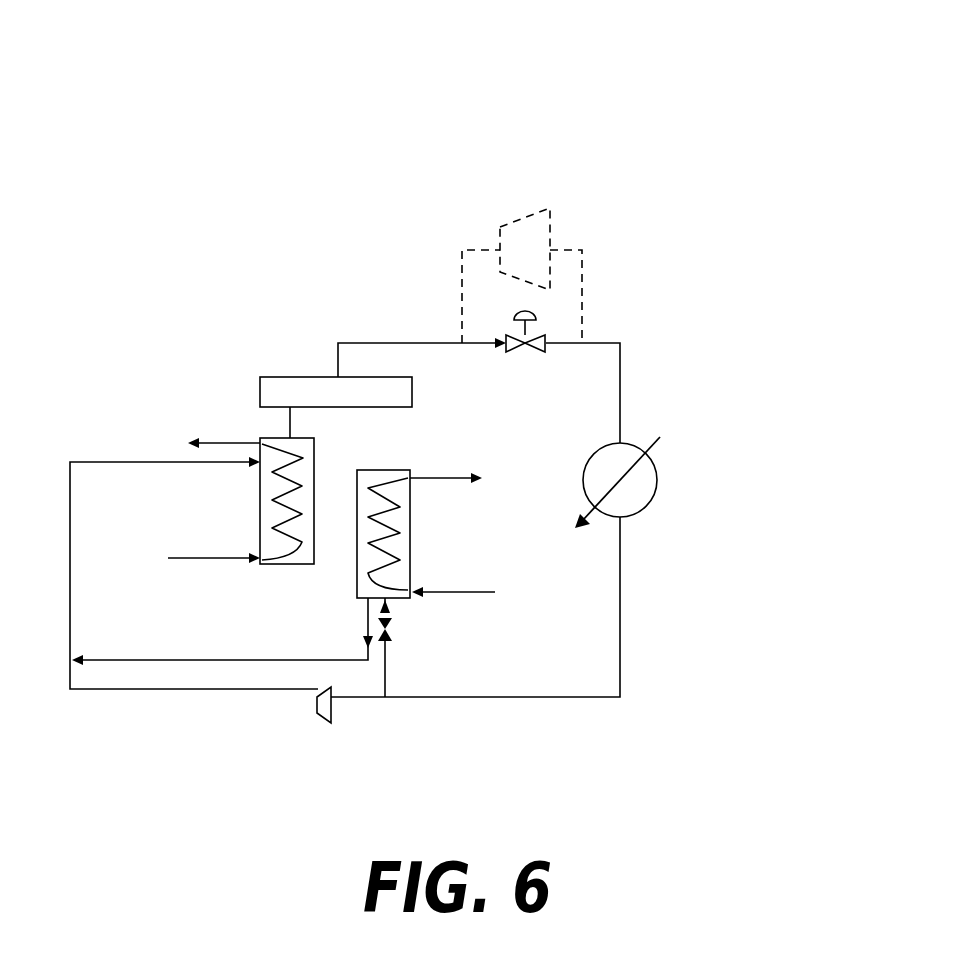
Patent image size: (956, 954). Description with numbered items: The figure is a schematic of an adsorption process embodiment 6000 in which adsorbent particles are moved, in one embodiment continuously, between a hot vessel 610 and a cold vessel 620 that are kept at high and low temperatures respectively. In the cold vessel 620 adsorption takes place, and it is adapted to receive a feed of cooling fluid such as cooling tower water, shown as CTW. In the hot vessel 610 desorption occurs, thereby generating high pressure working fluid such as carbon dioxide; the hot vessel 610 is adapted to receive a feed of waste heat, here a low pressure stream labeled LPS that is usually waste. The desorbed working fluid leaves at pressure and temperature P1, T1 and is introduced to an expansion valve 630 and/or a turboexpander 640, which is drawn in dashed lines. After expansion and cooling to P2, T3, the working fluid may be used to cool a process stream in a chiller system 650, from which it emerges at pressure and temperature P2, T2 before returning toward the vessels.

The adsorption process embodiment 6000 is at (424, 108).
The hot vessel 610 is at (287, 571).
The cold vessel 620 is at (410, 525).
The expansion valve 630 is at (545, 341).
The turboexpander 640 is at (522, 218).
The chiller system 650 is at (657, 483).